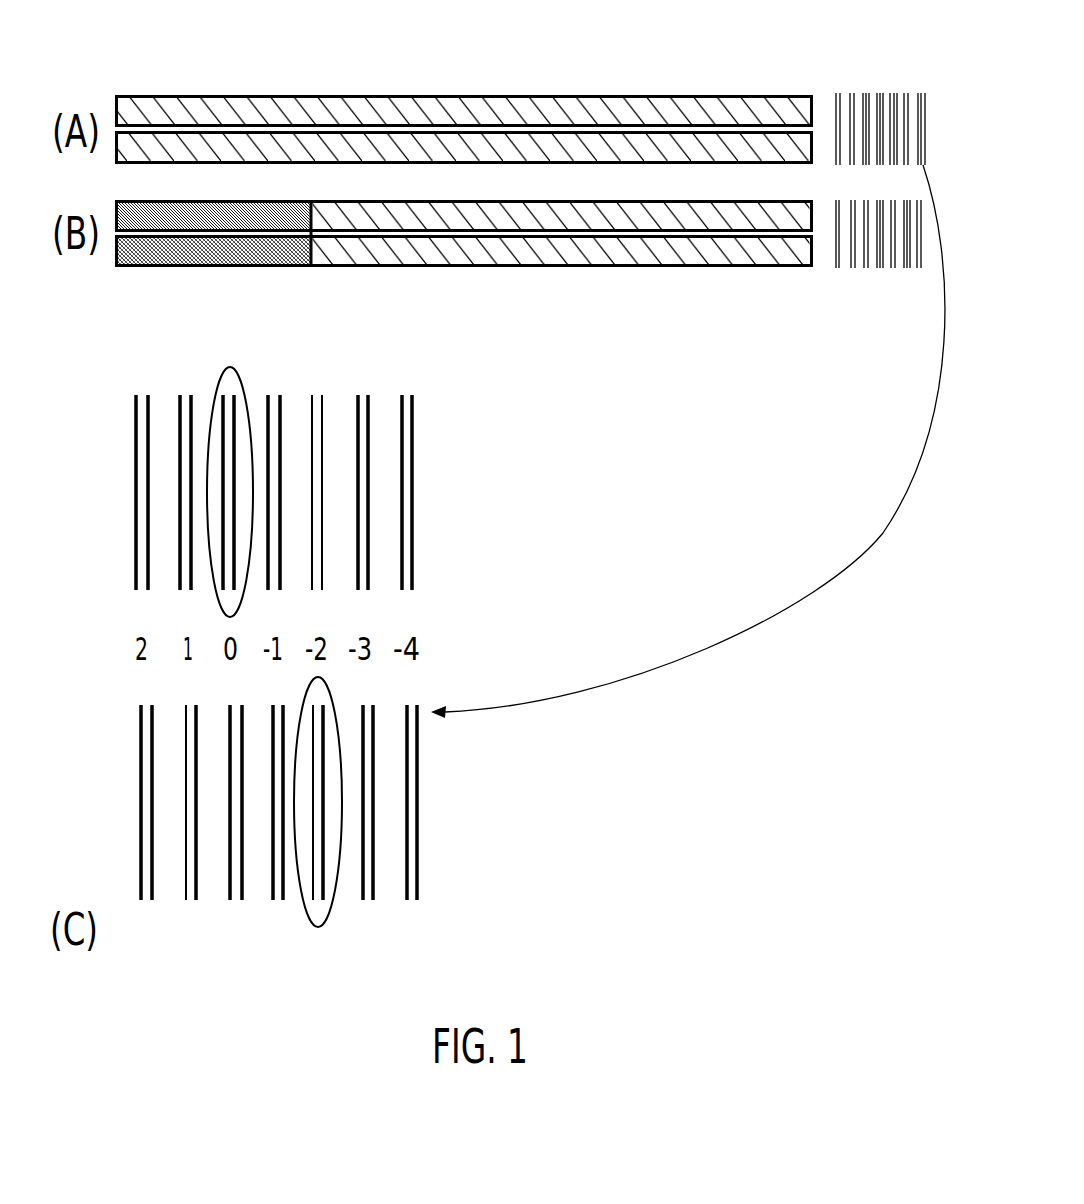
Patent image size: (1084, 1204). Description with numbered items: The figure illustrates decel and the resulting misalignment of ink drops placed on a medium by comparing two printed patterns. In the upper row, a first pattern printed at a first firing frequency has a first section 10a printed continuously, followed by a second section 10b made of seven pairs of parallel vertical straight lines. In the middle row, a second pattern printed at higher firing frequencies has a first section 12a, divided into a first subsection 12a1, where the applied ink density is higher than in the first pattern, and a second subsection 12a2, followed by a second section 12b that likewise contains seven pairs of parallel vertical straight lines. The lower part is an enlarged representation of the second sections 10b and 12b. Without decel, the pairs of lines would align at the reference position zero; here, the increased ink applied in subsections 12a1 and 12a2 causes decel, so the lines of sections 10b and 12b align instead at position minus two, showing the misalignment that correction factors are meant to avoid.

The first section of the first pattern 10a is at (465, 88).
The second section of the first pattern 10b is at (862, 86).
The first section of the second pattern 12a is at (392, 284).
The first subsection 12a1 is at (221, 264).
The second subsection 12a2 is at (538, 264).
The second section of the second pattern 12b is at (884, 279).